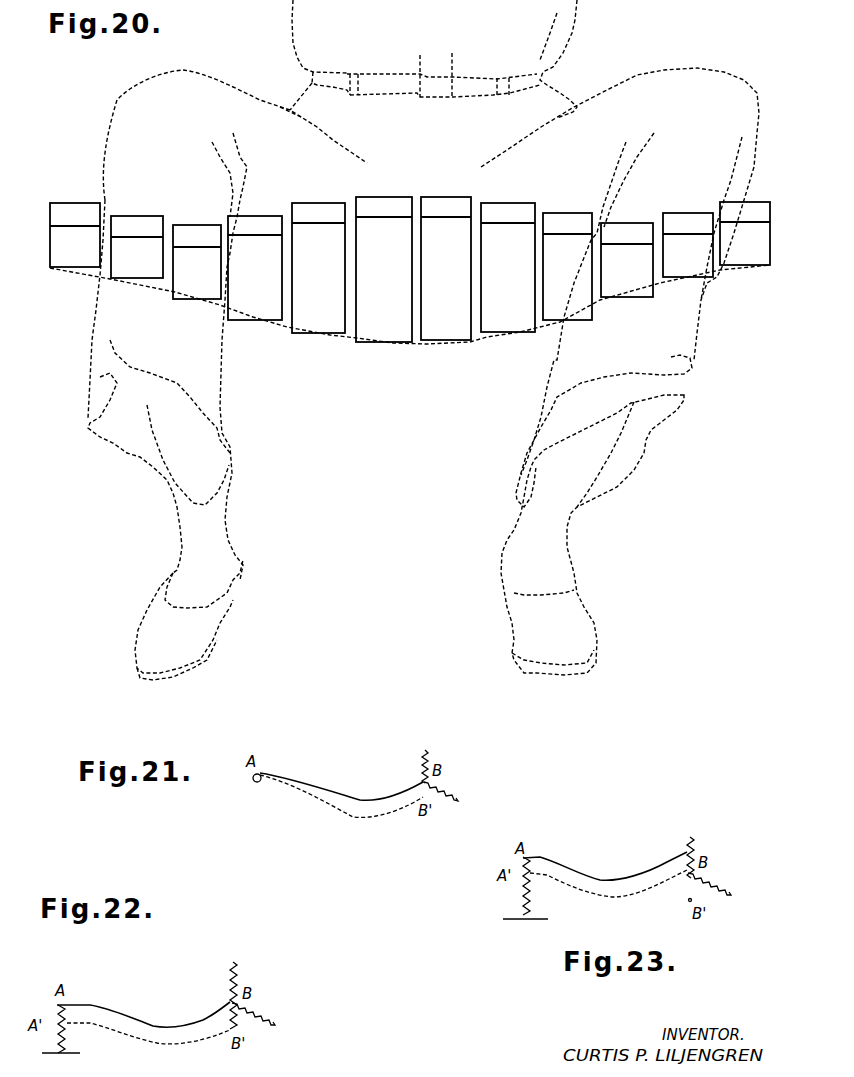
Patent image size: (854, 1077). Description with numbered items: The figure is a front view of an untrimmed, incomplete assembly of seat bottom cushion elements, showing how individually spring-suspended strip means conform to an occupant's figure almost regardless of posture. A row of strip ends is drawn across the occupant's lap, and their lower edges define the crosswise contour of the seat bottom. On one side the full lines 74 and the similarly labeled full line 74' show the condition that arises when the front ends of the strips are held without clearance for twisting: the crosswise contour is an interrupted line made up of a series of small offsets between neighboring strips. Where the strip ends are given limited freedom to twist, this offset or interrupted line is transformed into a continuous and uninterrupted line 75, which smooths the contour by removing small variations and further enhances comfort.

The full lines 74 is at (166, 279).
The pocket 74' is at (196, 279).
The continuous and uninterrupted line 75 is at (506, 330).